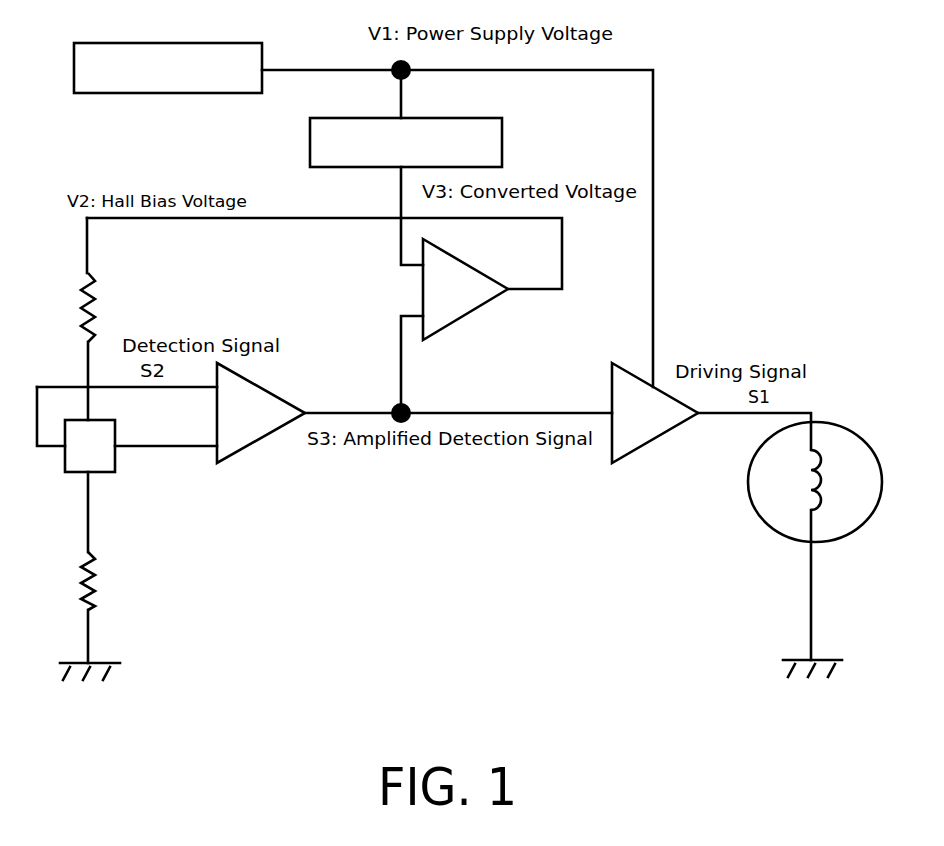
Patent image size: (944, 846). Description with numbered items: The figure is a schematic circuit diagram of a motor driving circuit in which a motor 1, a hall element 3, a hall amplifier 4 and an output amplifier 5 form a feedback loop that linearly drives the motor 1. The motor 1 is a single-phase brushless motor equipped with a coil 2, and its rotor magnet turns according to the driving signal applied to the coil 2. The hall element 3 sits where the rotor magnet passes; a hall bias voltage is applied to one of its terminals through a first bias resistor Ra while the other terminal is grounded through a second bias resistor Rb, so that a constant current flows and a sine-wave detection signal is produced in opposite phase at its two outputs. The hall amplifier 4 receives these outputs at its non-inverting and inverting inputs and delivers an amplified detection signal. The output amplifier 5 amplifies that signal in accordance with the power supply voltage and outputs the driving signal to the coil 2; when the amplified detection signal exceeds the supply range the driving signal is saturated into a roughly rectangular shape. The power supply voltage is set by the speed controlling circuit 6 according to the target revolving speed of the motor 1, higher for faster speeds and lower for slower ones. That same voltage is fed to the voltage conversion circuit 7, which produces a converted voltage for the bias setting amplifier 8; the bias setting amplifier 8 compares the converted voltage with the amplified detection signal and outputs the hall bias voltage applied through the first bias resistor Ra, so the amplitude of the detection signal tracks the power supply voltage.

The motor 1 is at (838, 424).
The coil 2 is at (808, 478).
The hall element 3 is at (89, 453).
The hall amplifier 4 is at (250, 418).
The output amplifier 5 is at (644, 422).
The speed controlling circuit 6 is at (145, 56).
The voltage conversion circuit 7 is at (315, 131).
The bias setting amplifier 8 is at (447, 288).
The first bias resistor Ra is at (66, 307).
The second bias resistor Rb is at (66, 581).